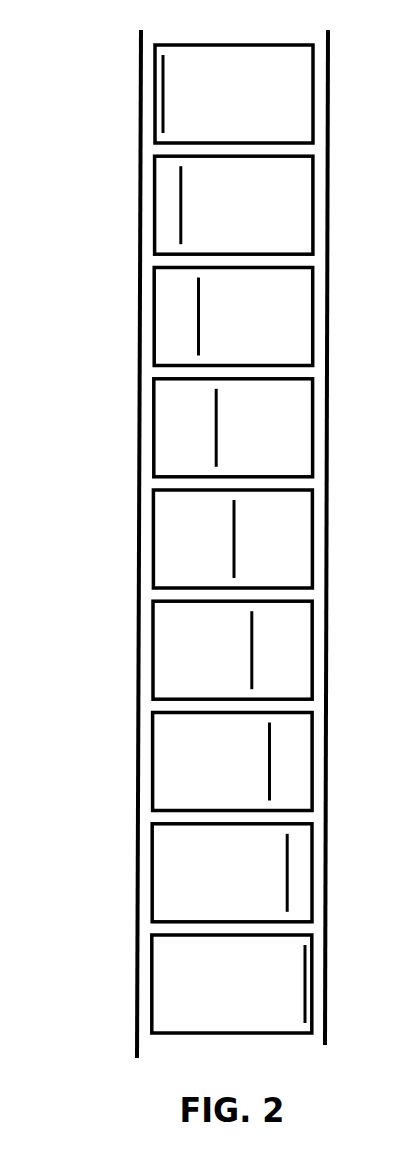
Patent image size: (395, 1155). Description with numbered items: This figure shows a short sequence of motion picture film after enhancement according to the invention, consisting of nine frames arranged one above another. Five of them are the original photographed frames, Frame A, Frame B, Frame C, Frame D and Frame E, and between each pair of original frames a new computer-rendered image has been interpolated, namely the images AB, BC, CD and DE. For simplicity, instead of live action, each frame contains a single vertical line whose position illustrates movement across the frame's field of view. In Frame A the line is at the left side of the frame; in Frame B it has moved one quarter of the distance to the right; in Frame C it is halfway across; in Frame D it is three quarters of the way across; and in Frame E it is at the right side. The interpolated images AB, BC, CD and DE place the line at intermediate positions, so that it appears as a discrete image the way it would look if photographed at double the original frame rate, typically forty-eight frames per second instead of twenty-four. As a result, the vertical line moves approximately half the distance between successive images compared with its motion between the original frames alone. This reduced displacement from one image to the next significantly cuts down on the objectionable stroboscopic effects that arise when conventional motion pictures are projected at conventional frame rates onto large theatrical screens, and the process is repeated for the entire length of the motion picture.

The Frame A is at (184, 94).
The Image AB is at (177, 205).
The Frame B is at (184, 317).
The Image BC is at (177, 428).
The Frame C is at (184, 539).
The Image CD is at (177, 650).
The Frame D is at (184, 762).
The Image DE is at (177, 873).
The Frame E is at (183, 984).